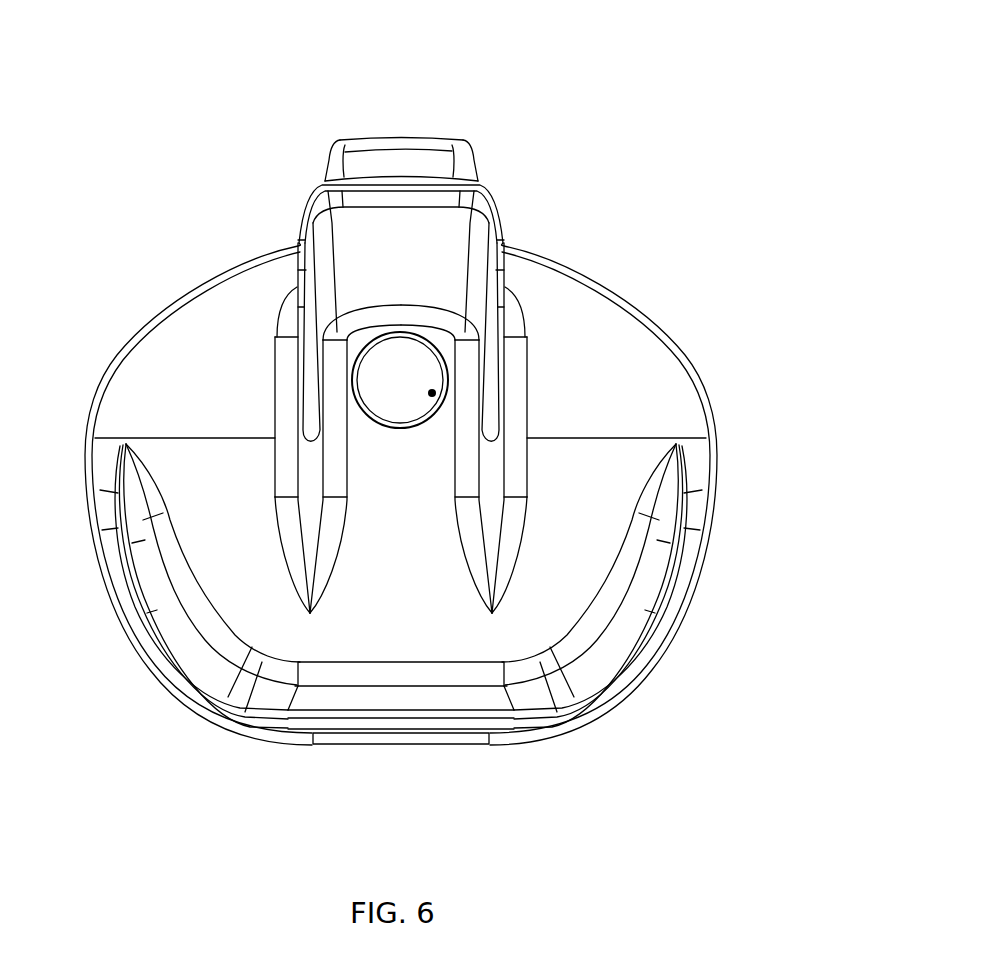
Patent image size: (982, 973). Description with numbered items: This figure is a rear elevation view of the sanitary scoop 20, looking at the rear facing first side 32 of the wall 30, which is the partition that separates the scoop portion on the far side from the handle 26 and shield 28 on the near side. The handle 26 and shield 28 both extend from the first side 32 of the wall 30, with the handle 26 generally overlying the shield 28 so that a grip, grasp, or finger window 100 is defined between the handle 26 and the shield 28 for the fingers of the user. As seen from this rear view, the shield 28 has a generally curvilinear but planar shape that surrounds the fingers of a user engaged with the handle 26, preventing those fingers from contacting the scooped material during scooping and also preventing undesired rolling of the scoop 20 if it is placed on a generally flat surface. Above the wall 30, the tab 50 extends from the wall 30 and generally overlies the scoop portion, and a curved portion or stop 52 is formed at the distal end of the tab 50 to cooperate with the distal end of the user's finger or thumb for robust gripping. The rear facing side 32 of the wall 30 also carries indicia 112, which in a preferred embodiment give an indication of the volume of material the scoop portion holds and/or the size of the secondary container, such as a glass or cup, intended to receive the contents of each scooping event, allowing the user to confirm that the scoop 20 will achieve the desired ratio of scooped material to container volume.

The scoop 20 is at (712, 110).
The handle 26 is at (373, 243).
The shield 28 is at (600, 650).
The wall 30 is at (633, 303).
The first side 32 is at (182, 352).
The tab 50 is at (450, 170).
The stop 52 is at (390, 150).
The finger window 100 is at (647, 377).
The indicia 112 is at (353, 593).